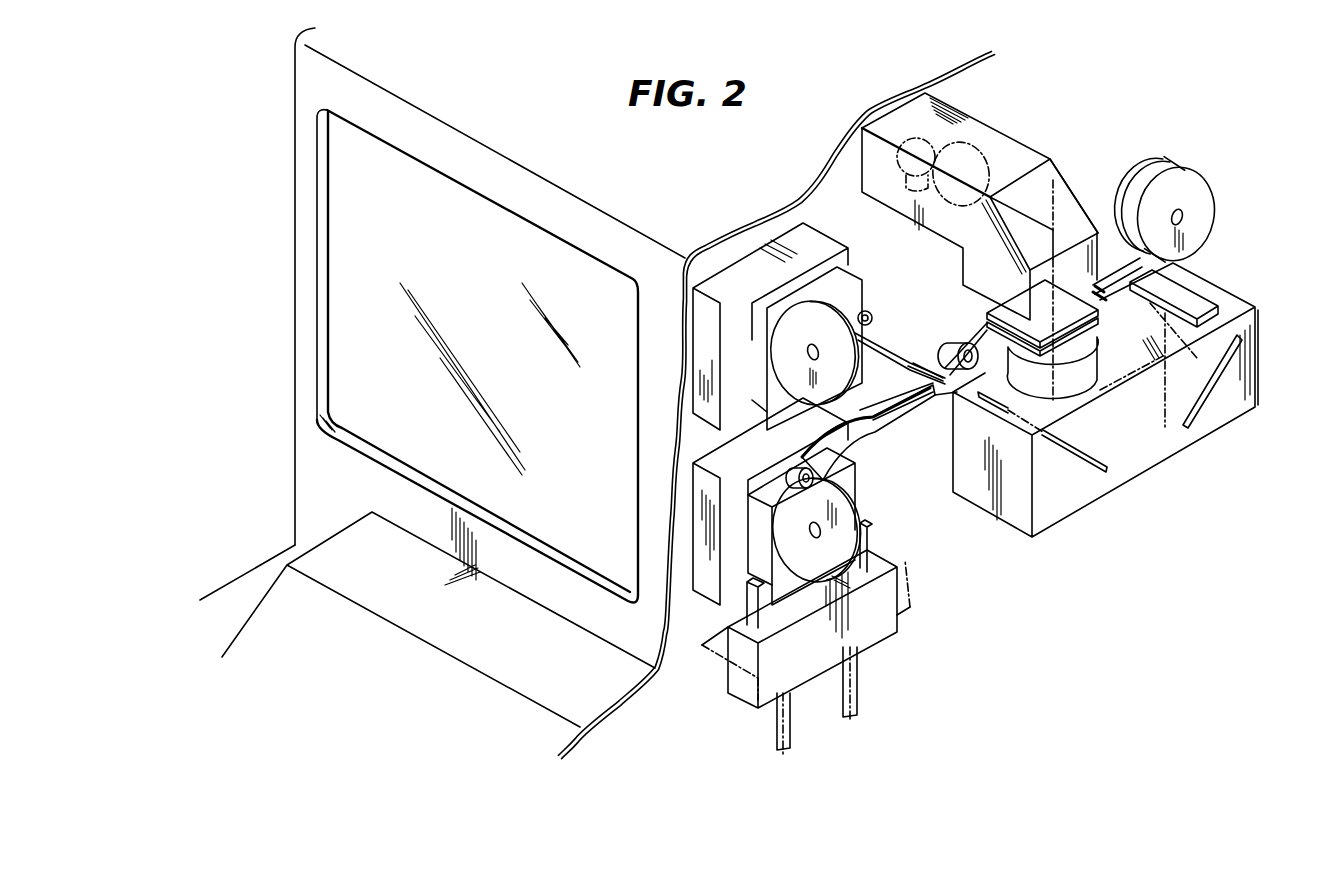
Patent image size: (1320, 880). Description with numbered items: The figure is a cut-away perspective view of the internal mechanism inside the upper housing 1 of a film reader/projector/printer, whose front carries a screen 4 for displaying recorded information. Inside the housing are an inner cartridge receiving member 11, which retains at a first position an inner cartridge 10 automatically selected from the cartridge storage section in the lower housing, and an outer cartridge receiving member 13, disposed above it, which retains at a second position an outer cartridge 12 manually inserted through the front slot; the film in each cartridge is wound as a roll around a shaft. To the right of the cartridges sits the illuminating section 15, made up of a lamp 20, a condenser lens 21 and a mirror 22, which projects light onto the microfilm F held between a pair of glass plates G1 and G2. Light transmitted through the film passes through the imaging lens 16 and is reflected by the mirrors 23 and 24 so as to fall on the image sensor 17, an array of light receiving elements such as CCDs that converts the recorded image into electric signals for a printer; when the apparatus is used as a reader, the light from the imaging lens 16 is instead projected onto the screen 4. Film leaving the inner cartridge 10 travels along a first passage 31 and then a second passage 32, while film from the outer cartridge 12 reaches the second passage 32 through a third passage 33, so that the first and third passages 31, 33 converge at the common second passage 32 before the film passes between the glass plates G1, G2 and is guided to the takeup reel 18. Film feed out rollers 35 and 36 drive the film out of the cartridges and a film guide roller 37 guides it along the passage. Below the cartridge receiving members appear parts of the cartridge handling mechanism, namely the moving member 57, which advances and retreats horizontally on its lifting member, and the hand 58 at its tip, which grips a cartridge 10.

The upper housing 1 is at (293, 258).
The screen 4 is at (342, 357).
The inner cartridge 10 is at (857, 473).
The inner cartridge receiving member 11 is at (713, 587).
The outer cartridge 12 is at (845, 282).
The outer cartridge receiving member 13 is at (813, 247).
The illuminating section 15 is at (1033, 145).
The imaging lens 16 is at (1070, 383).
The image sensor 17 is at (1187, 297).
The takeup reel 18 is at (1197, 193).
The lamp 20 is at (924, 140).
The condenser lens 21 is at (975, 153).
The mirror 22 is at (1050, 212).
The mirror 23 is at (1082, 463).
The mirror 24 is at (1197, 387).
The first passage 31 is at (888, 420).
The second passage 32 is at (990, 350).
The third passage 33 is at (893, 338).
The film feed out roller 35 is at (795, 470).
The film feed out roller 36 is at (876, 312).
The film guide roller 37 is at (950, 347).
The moving member 57 is at (887, 590).
The hand 58 is at (753, 615).
The microfilm F is at (1120, 300).
The glass plate G1 is at (987, 327).
The glass plate G2 is at (987, 313).